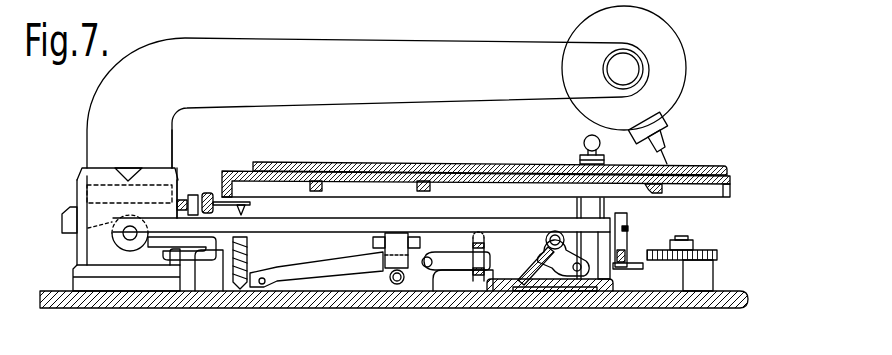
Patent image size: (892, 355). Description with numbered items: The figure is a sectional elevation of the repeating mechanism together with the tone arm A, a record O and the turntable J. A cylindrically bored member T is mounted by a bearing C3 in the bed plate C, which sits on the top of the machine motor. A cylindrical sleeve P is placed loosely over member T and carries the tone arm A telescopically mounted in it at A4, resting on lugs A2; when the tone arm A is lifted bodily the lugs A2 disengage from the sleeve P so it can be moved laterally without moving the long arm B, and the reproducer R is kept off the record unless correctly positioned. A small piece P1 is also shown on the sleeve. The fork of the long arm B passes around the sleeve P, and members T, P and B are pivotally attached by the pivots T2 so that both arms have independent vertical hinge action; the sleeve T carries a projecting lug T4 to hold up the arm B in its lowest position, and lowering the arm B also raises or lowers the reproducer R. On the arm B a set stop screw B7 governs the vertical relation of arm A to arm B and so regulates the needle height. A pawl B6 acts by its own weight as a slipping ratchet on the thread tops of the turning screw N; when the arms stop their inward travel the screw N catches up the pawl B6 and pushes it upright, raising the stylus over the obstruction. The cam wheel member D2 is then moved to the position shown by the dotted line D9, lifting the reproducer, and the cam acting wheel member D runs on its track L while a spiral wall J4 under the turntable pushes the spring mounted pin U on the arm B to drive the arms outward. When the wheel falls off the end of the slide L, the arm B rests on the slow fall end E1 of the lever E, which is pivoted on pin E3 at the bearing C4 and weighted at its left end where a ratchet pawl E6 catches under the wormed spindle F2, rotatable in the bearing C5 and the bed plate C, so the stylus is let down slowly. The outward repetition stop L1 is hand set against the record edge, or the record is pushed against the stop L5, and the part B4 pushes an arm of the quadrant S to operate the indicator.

The tone arm A is at (363, 109).
The lugs A2 is at (123, 167).
The telescopic mounting A4 is at (188, 174).
The reproducer R is at (624, 85).
The cylindrical sleeve P is at (83, 190).
The block lug P1 is at (63, 220).
The set stop screw B7 is at (191, 195).
The bearing C5 is at (241, 204).
The record O is at (283, 163).
The table J is at (353, 174).
The spiral wall J4 is at (311, 179).
The long arm B is at (367, 222).
The pivots T2 is at (125, 235).
The cylindrically bored member T is at (182, 248).
The bearing C3 is at (140, 276).
The projecting lug T4 is at (180, 274).
The wormed spindle F2 is at (249, 247).
The lever E is at (307, 265).
The ratchet pawl E6 is at (253, 278).
The pawl B6 is at (372, 250).
The screw N is at (393, 284).
The pin E3 is at (388, 263).
The bearing C4 is at (420, 291).
The slow fall end E1 is at (477, 282).
The outward repetition stop L1 is at (575, 213).
The stop L5 is at (582, 158).
The slide L is at (530, 273).
The cam acting wheel member D is at (567, 264).
The cam wheel member D2 is at (537, 267).
The dotted line position D9 is at (550, 268).
The spring mounted pin U is at (624, 224).
The part B4 is at (641, 267).
The quadrant S is at (692, 253).
The bed plate C is at (625, 303).